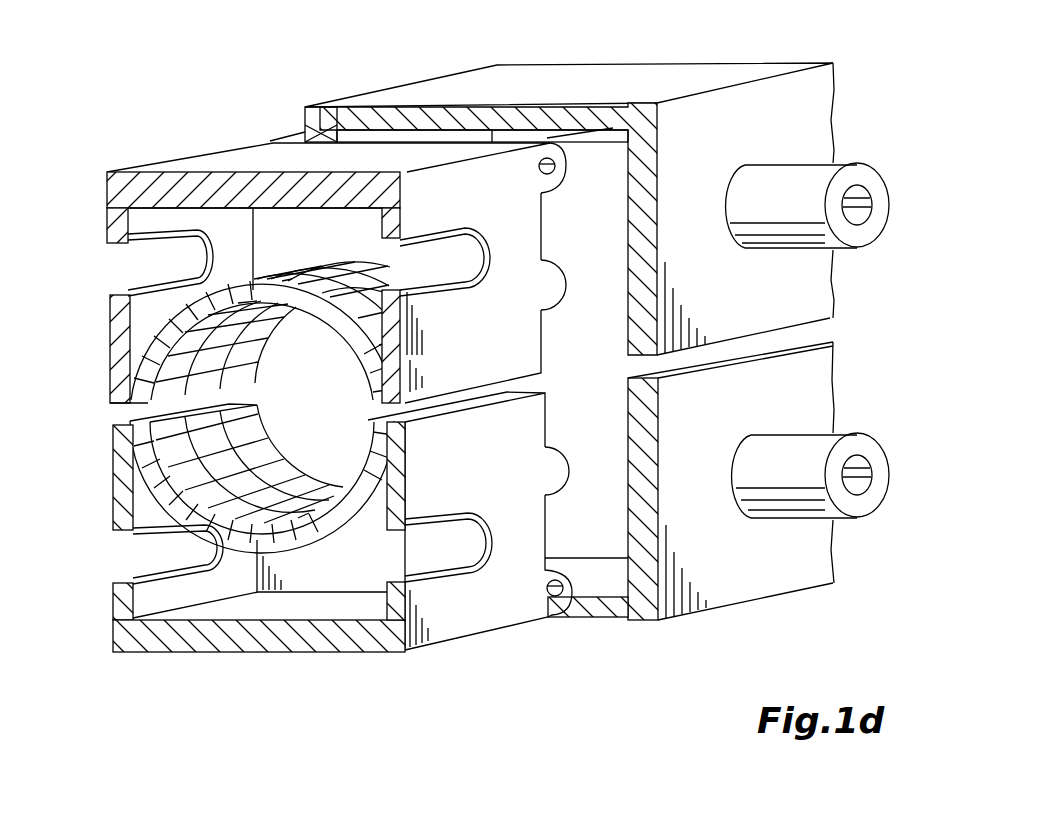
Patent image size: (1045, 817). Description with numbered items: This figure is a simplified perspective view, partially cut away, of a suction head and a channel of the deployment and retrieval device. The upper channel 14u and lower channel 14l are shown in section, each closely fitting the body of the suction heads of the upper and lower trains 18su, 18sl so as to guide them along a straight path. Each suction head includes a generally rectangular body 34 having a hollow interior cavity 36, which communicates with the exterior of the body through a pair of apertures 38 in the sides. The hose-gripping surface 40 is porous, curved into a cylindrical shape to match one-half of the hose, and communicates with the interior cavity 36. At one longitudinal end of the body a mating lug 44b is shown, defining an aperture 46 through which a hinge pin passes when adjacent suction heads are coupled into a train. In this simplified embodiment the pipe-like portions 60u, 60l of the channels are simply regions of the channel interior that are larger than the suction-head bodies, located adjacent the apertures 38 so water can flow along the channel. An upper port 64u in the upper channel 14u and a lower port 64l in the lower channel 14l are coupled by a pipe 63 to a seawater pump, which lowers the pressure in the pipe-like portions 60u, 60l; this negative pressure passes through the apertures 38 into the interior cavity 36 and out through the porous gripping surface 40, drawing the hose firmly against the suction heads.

The upper channel 14u is at (305, 108).
The lower channel 14l is at (782, 592).
The body 34 is at (203, 156).
The interior cavity 36 is at (155, 222).
The apertures 38 is at (145, 270).
The train of suction heads (upper) 18su is at (324, 273).
The train of suction heads (lower) 18sl is at (488, 522).
The hose-gripping surface 40 is at (272, 353).
The mating lug 44b is at (553, 186).
The aperture 46 is at (560, 167).
The pipe-like portions 60u is at (588, 318).
The pipe-like portions 60l is at (608, 576).
The upper port 64u is at (799, 214).
The lower port 64l is at (870, 512).
The pipe 63 is at (873, 240).